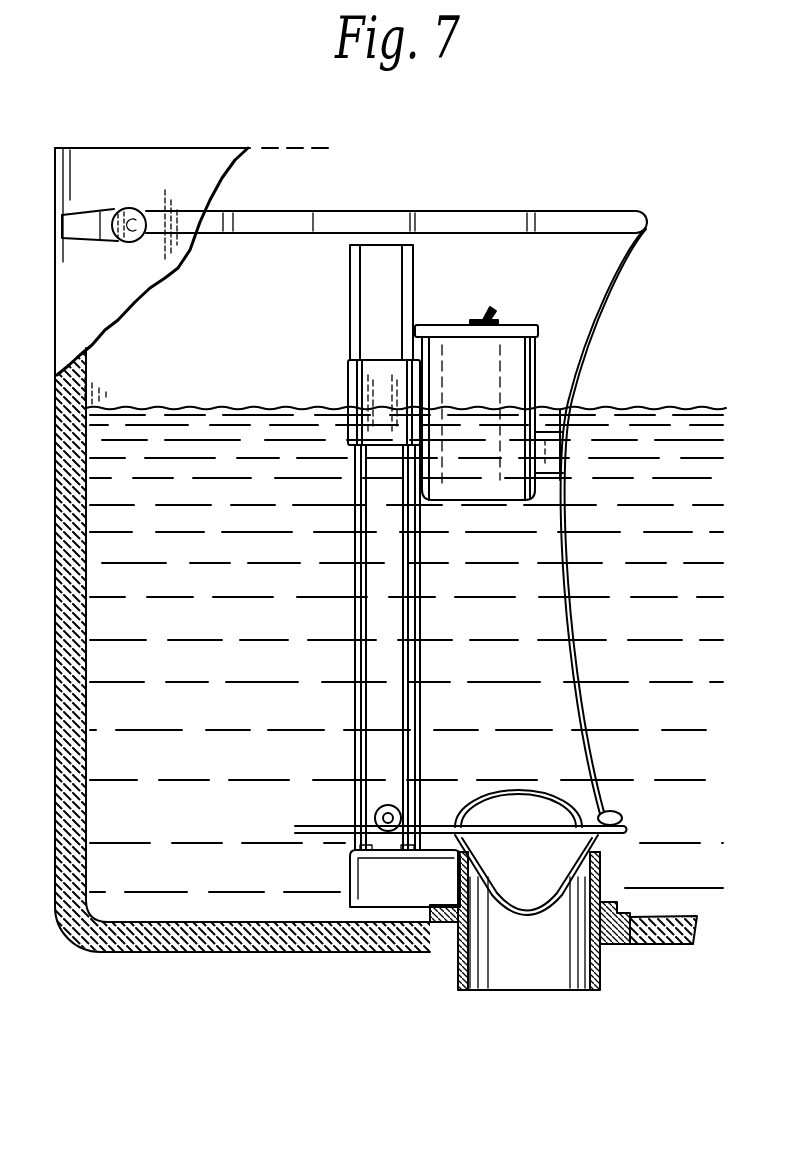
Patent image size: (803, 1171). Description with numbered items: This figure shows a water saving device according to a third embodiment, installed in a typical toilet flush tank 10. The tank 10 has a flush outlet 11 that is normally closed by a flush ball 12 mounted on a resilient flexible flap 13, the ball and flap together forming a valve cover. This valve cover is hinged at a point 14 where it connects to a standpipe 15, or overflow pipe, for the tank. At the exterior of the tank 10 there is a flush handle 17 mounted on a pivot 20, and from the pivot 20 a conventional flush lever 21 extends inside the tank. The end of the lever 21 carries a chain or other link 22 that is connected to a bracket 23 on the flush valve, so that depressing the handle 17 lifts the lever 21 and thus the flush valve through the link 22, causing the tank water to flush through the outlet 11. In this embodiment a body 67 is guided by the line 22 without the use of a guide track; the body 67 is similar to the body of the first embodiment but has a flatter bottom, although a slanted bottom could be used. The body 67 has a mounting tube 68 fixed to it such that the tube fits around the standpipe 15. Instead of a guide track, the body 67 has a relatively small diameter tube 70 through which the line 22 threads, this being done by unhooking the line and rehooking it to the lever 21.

The toilet flush tank 10 is at (183, 940).
The flush outlet 11 is at (603, 861).
The flush ball 12 is at (553, 887).
The resilient flexible flap 13 is at (458, 828).
The hinge point 14 is at (296, 838).
The standpipe 15 is at (353, 583).
The flush handle 17 is at (93, 216).
The pivot 20 is at (117, 252).
The flush lever 21 is at (244, 211).
The link 22 is at (603, 286).
The bracket 23 is at (625, 818).
The body 67 is at (540, 372).
The mounting tube 68 is at (348, 378).
The small diameter tube 70 is at (533, 502).